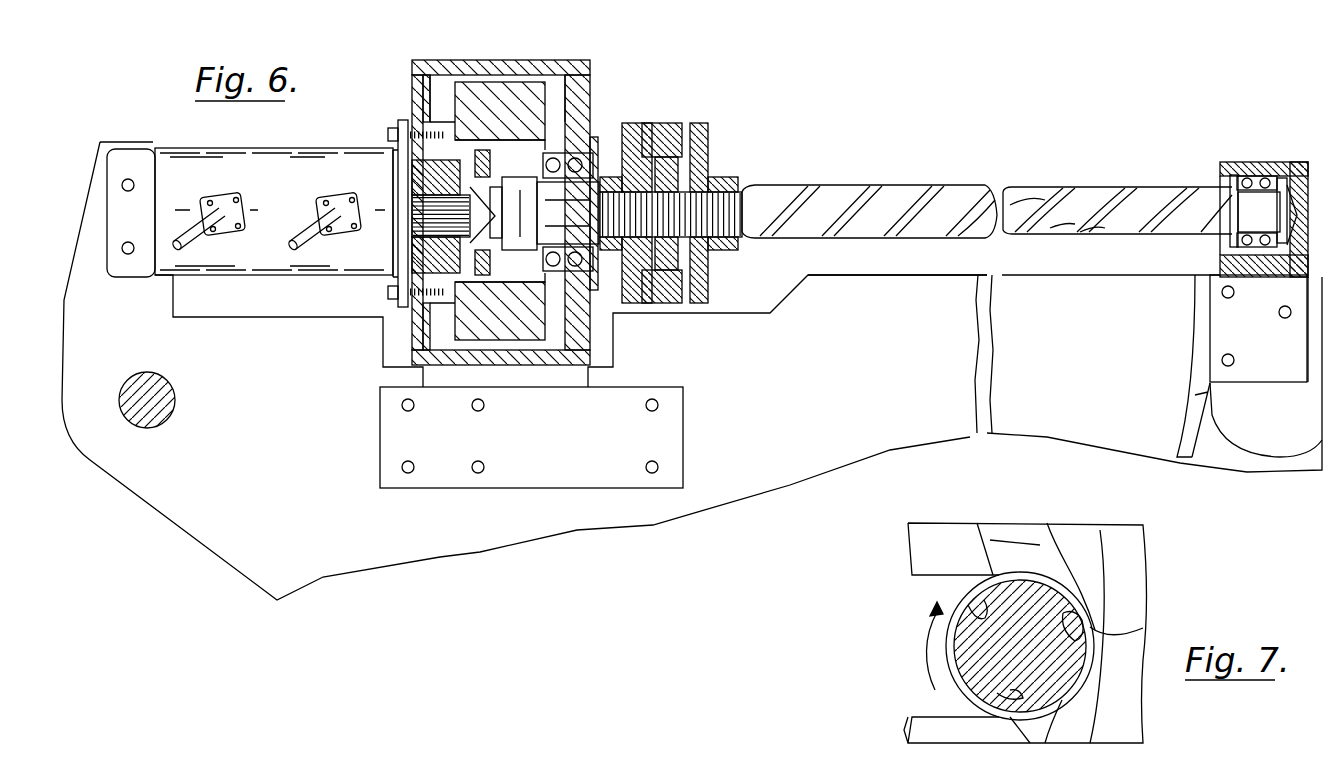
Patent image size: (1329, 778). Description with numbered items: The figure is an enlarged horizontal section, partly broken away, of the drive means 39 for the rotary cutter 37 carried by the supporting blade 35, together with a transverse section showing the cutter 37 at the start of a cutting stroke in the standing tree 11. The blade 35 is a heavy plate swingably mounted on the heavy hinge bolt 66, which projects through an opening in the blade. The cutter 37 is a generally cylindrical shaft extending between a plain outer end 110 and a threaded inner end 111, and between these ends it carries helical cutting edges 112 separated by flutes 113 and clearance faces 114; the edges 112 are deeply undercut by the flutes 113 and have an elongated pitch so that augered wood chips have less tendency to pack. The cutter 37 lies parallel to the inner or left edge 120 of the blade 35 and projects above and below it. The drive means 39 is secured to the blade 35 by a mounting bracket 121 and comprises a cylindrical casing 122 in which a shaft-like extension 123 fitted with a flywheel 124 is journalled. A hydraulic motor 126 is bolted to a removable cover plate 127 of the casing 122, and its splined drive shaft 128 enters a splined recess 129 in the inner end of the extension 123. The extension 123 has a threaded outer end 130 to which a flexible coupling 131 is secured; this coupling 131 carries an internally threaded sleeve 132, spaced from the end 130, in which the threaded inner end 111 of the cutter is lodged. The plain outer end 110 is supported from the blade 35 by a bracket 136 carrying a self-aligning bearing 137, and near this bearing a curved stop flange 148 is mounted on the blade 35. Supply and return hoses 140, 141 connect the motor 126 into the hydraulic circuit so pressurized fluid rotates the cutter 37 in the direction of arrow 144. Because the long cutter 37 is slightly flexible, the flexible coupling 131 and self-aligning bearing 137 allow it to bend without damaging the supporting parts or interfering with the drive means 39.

In FIG. 7, the standing tree 11 is at (1133, 552).
In FIG. 6, the supporting blade 35 is at (907, 427).
In FIG. 6, the cutter 37 is at (947, 197).
In FIG. 7, the cutter 37 is at (967, 662).
In FIG. 6, the drive means 39 is at (622, 90).
In FIG. 6, the hinge bolt 66 is at (165, 398).
In FIG. 6, the plain outer end 110 is at (1247, 210).
In FIG. 6, the threaded inner end 111 is at (722, 177).
In FIG. 6, the helical cutting edges 112 is at (1090, 228).
In FIG. 7, the helical cutting edges 112 is at (1090, 627).
In FIG. 6, the flutes 113 is at (1065, 230).
In FIG. 7, the flutes 113 is at (1093, 630).
In FIG. 6, the clearance faces 114 is at (1040, 203).
In FIG. 7, the clearance faces 114 is at (1083, 652).
In FIG. 6, the inner or left edge 120 is at (908, 277).
In FIG. 6, the mounting bracket 121 is at (495, 478).
In FIG. 6, the cylindrical casing 122 is at (567, 65).
In FIG. 6, the shaft-like extension 123 is at (562, 197).
In FIG. 6, the flywheel 124 is at (462, 105).
In FIG. 6, the hydraulic motor 126 is at (312, 160).
In FIG. 6, the removable cover plate 127 is at (412, 83).
In FIG. 6, the splined drive shaft 128 is at (407, 222).
In FIG. 6, the splined recess 129 is at (403, 205).
In FIG. 6, the threaded outer end 130 is at (610, 175).
In FIG. 6, the flexible coupling 131 is at (664, 120).
In FIG. 6, the internally threaded sleeve 132 is at (723, 235).
In FIG. 6, the bracket 136 is at (1297, 167).
In FIG. 6, the self-aligning bearing 137 is at (1250, 178).
In FIG. 6, the supply hose 140 is at (198, 233).
In FIG. 6, the return hose 141 is at (312, 218).
In FIG. 7, the arrow 144 is at (928, 635).
In FIG. 6, the curved stop flange 148 is at (1190, 423).